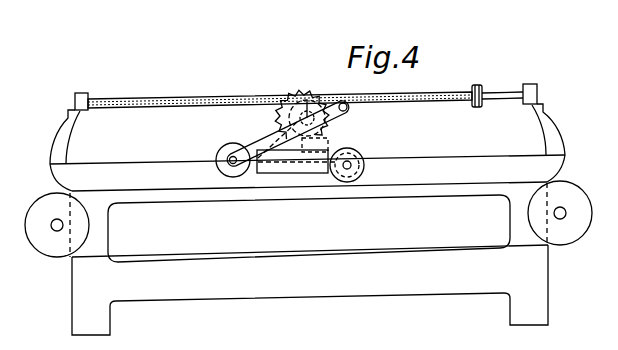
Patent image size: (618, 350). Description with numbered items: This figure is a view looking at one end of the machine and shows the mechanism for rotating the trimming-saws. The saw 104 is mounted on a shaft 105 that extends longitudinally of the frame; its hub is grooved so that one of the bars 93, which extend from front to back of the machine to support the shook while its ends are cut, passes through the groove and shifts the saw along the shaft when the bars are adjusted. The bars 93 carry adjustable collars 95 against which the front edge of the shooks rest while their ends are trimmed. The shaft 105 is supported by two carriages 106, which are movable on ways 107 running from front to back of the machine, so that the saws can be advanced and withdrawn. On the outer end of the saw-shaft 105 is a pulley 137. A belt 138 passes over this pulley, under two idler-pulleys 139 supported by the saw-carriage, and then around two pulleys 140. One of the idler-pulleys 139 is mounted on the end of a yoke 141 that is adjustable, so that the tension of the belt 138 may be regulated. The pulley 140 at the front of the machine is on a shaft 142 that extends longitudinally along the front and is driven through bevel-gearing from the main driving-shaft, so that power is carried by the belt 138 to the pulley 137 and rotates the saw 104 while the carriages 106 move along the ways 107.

The bars 93 is at (190, 99).
The adjustable collars 95 is at (478, 91).
The saw 104 is at (335, 126).
The shaft 105 is at (315, 93).
The carriages 106 is at (306, 168).
The ways 107 is at (455, 157).
The pulley 137 is at (296, 96).
The belt 138 is at (181, 185).
The idler-pulleys 139 is at (230, 138).
The pulleys 140 is at (90, 230).
The yoke 141 is at (282, 128).
The shaft 142 is at (562, 220).